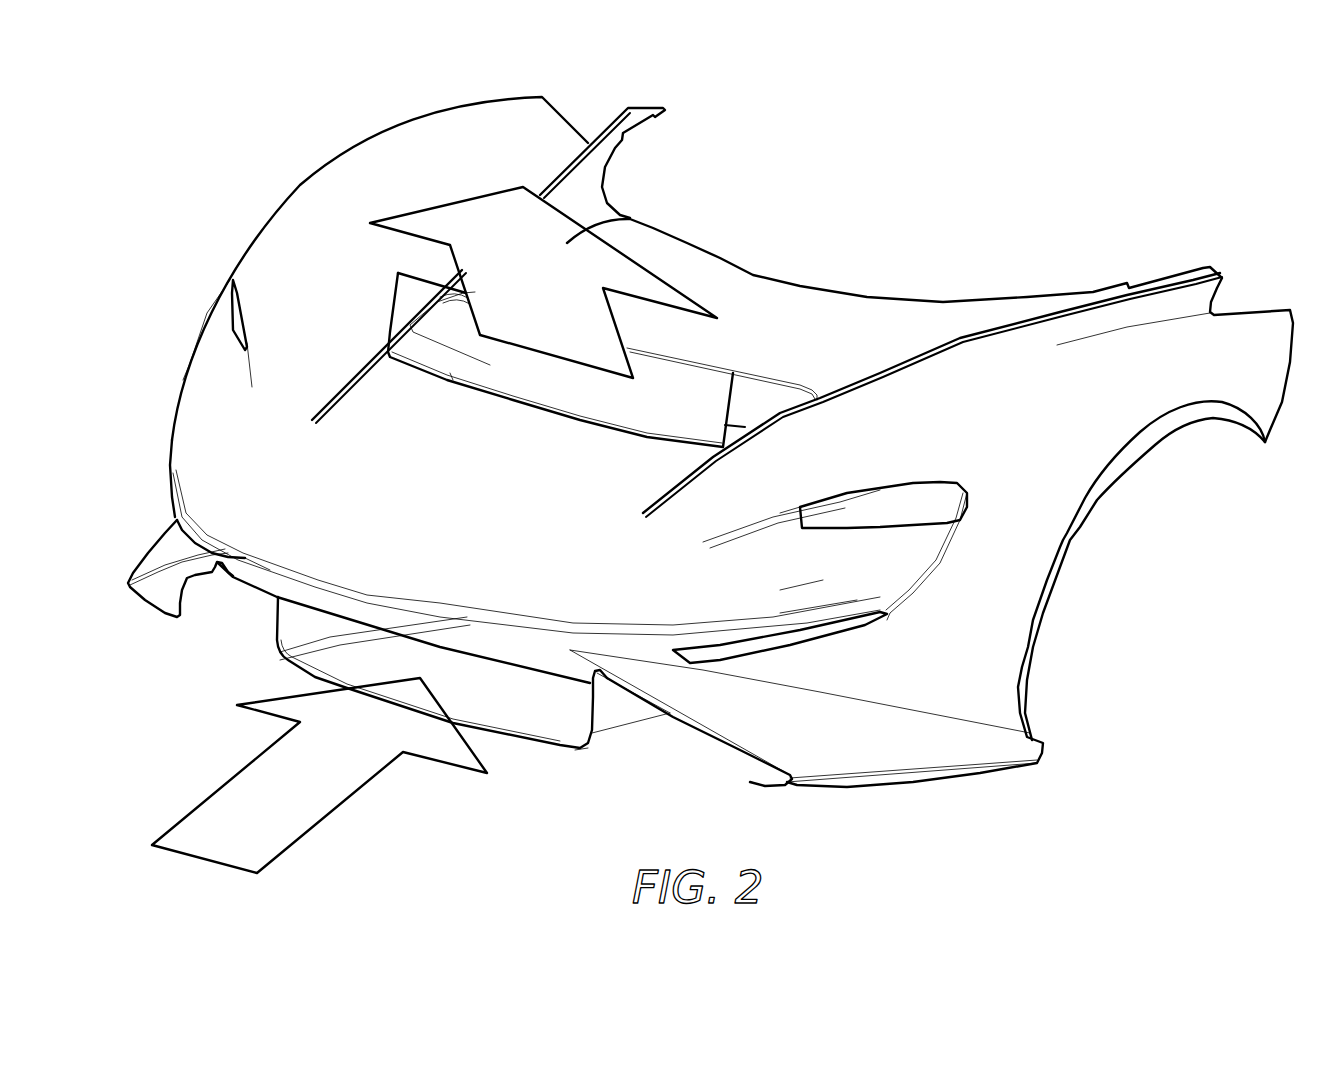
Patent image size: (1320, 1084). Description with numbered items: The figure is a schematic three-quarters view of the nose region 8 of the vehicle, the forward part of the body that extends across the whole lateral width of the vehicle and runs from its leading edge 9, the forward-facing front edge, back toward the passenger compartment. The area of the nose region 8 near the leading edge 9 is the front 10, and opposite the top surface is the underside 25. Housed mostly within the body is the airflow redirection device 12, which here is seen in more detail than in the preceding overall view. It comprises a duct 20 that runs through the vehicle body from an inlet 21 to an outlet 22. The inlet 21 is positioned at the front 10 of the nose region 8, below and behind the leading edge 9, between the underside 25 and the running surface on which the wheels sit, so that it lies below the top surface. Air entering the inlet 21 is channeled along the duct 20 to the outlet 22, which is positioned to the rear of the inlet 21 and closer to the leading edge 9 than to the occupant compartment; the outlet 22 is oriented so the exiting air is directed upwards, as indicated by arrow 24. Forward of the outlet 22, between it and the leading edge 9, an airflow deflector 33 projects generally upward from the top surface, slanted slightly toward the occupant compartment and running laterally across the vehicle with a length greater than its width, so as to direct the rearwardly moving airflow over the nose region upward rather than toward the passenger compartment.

The nose region 8 is at (160, 423).
The leading edge 9 is at (177, 522).
The front 10 is at (303, 537).
The airflow redirection device 12 is at (586, 765).
The duct 20 is at (627, 713).
The inlet 21 is at (523, 712).
The outlet 22 is at (772, 393).
The arrow 24 is at (565, 245).
The underside 25 is at (252, 609).
The airflow deflector 33 is at (408, 298).